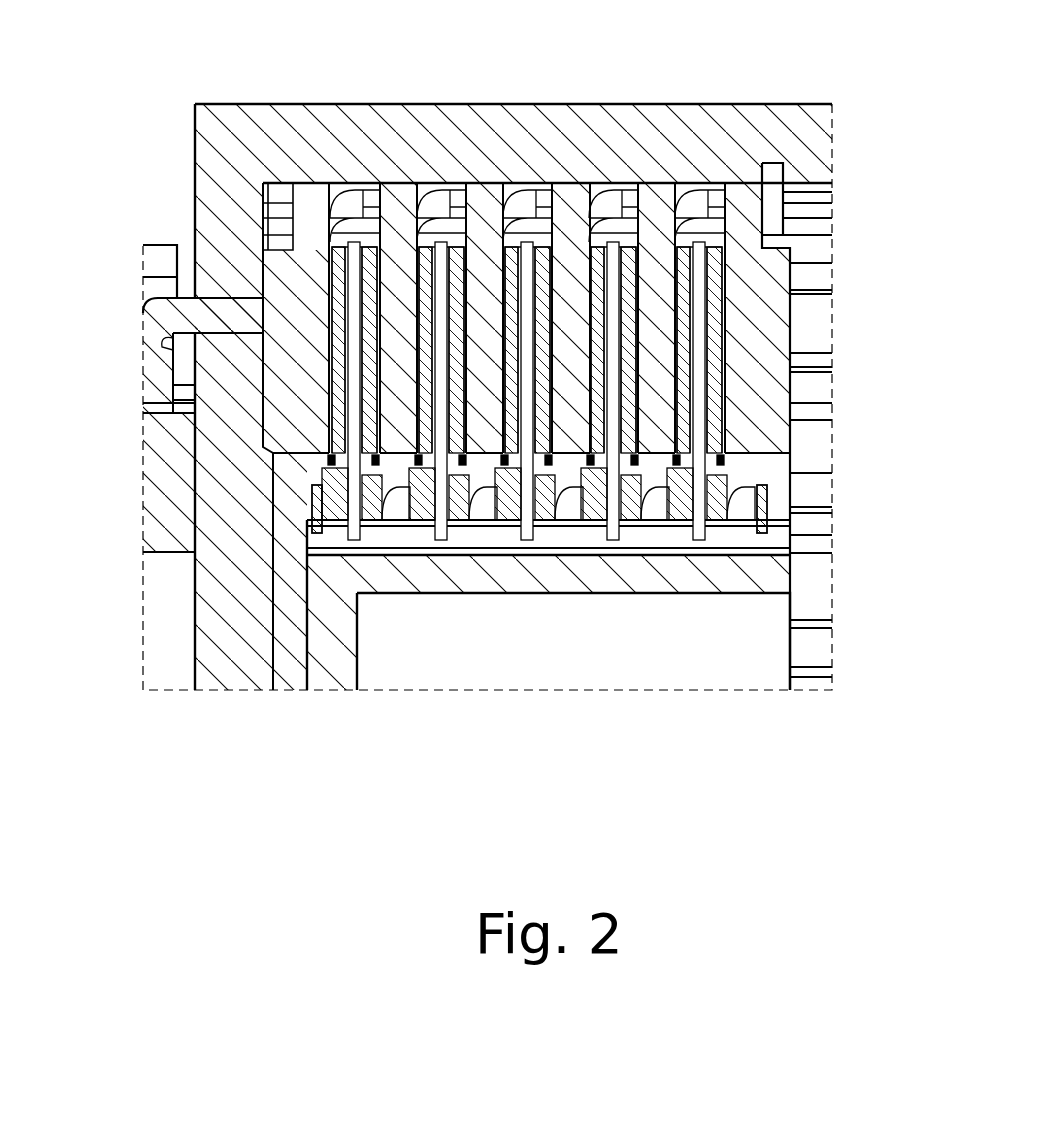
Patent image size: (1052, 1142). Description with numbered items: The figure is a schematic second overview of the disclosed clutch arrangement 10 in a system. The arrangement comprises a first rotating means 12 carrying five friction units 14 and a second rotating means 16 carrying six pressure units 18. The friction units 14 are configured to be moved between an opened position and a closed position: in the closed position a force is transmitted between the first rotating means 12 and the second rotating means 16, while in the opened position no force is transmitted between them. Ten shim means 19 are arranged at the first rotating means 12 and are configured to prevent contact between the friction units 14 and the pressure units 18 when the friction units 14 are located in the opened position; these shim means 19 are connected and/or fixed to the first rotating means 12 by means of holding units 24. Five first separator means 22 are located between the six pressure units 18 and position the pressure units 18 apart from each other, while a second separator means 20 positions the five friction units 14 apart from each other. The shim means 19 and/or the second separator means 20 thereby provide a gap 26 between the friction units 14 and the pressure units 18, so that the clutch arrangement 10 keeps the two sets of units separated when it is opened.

The clutch arrangement 10 is at (128, 92).
The first rotating means 12 is at (750, 580).
The friction units 14 is at (351, 541).
The second rotating means 16 is at (228, 635).
The pressure units 18 is at (312, 205).
The shim means 19 is at (327, 507).
The second separator means 20 is at (768, 541).
The first separator means 22 is at (693, 207).
The holding units 24 is at (743, 495).
The gap 26 is at (330, 363).